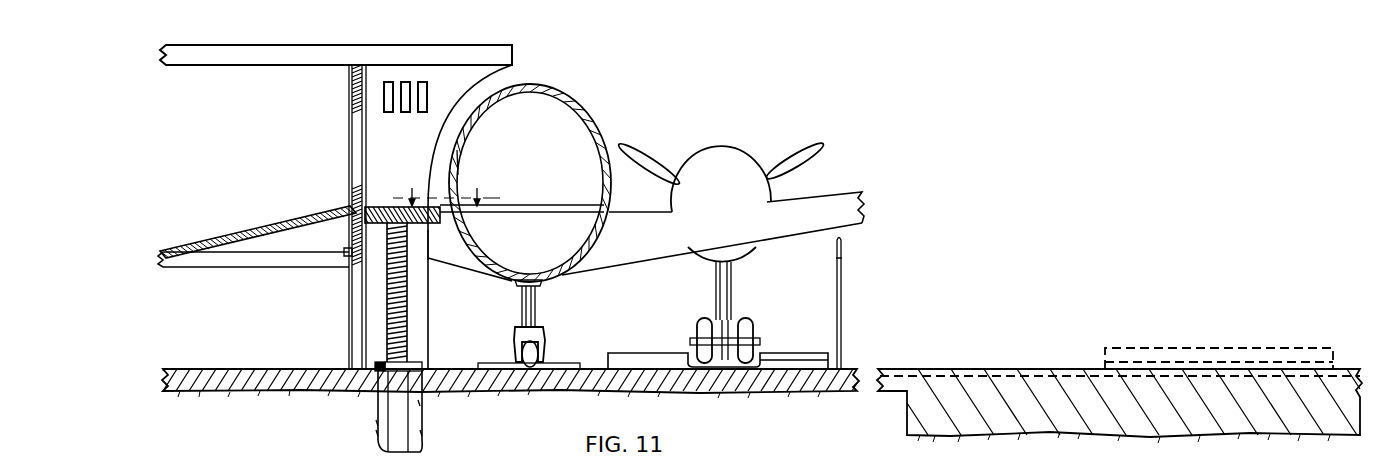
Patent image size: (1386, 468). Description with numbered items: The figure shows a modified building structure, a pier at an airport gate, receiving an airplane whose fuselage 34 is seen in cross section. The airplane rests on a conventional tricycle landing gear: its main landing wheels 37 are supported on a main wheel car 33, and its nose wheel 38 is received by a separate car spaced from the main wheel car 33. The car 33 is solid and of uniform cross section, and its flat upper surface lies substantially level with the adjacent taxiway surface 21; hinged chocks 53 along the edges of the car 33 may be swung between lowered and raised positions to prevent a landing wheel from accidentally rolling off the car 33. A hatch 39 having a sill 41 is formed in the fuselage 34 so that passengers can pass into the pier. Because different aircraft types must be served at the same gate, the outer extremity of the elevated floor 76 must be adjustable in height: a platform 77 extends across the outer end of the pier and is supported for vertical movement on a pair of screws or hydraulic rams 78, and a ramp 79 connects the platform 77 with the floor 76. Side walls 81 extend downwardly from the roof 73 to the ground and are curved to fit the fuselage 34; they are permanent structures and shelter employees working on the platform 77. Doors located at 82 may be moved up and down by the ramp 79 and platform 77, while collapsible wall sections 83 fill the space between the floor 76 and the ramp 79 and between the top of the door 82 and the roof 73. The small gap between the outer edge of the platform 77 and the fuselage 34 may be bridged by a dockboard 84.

The taxiway surface 21 is at (970, 368).
The main wheel car 33 is at (760, 360).
The fuselage 34 is at (592, 130).
The main landing wheels 37 is at (745, 325).
The nose wheel 38 is at (545, 345).
The hatch 39 is at (465, 145).
The sill 41 is at (458, 194).
The chock 53 is at (672, 360).
The roof 73 is at (492, 57).
The elevated floor 76 is at (225, 263).
The platform 77 is at (380, 205).
The screws or hydraulic rams 78 is at (428, 312).
The ramp 79 is at (305, 213).
The side walls 81 is at (457, 78).
The doors 82 is at (352, 130).
The collapsible wall sections 83 is at (352, 78).
The dockboard 84 is at (442, 245).